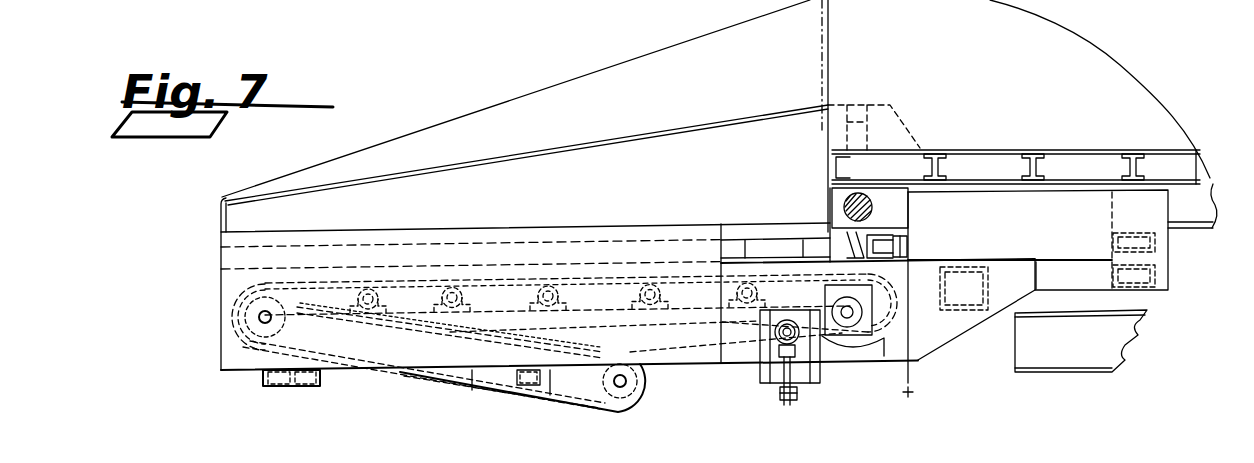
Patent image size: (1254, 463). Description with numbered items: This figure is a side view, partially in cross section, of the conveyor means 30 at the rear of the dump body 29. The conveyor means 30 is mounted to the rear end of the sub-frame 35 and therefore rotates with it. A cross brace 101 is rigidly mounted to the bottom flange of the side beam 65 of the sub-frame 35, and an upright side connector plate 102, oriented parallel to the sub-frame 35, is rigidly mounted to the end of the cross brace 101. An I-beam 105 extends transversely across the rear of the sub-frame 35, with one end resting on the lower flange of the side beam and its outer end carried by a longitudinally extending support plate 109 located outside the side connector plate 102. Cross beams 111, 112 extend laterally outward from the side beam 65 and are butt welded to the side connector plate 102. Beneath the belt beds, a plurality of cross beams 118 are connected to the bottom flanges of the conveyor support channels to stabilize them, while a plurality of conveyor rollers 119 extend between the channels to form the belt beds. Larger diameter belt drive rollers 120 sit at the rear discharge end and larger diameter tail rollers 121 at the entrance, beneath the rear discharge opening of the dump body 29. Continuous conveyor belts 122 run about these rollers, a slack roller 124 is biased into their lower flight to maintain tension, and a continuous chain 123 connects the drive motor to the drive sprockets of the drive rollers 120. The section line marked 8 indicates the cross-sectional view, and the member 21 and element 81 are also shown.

The section line 8- 8 is at (915, 392).
The support member 21 is at (1068, 350).
The dump body 29 is at (1110, 60).
The conveyor means 30 is at (766, 258).
The sub-frame 35 is at (1194, 181).
The side beam 65 is at (1200, 202).
The pivot pin 81 is at (862, 200).
The cross brace 101 is at (940, 318).
The side connector plate 102 is at (1004, 296).
The I-beam 105 is at (908, 242).
The support plate 109 is at (927, 257).
The cross beam 111 is at (1170, 240).
The cross beam 112 is at (1170, 272).
The cross beam 118 is at (262, 384).
The conveyor roller 119 is at (427, 290).
The belt drive roller 120 is at (236, 313).
The tail roller 121 is at (867, 348).
The conveyor belt 122 is at (578, 275).
The continuous chain 123 is at (471, 382).
The slack roller 124 is at (779, 346).